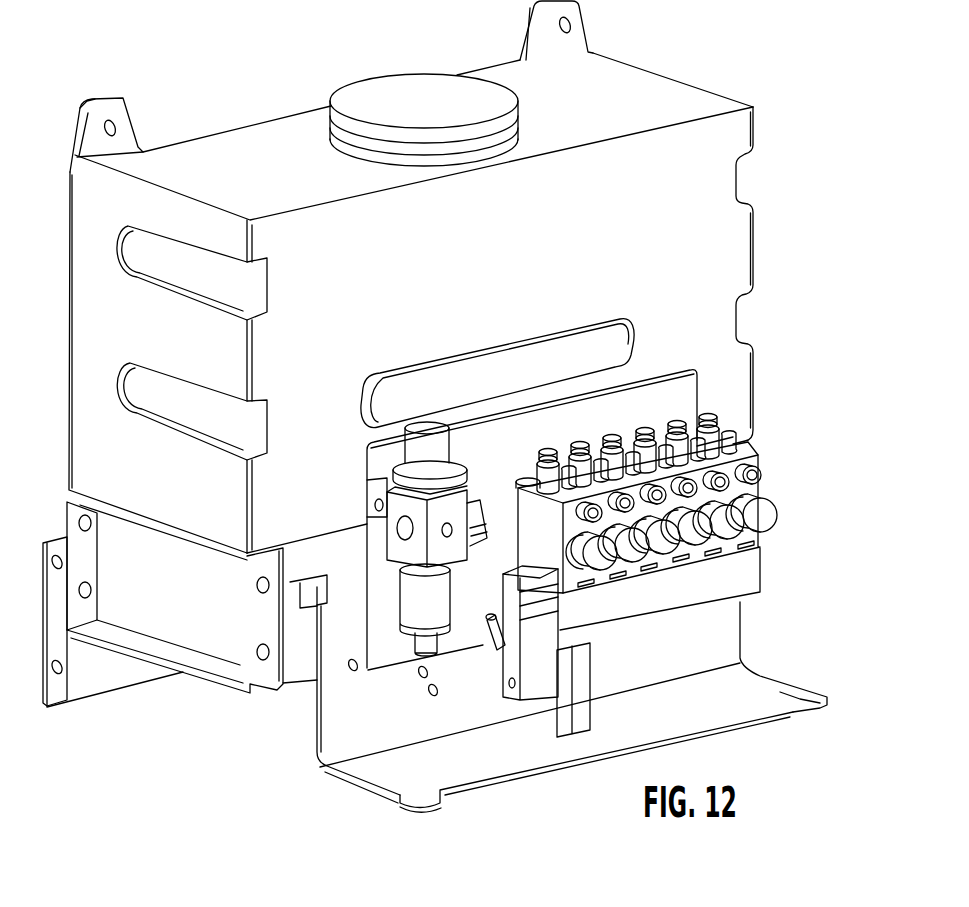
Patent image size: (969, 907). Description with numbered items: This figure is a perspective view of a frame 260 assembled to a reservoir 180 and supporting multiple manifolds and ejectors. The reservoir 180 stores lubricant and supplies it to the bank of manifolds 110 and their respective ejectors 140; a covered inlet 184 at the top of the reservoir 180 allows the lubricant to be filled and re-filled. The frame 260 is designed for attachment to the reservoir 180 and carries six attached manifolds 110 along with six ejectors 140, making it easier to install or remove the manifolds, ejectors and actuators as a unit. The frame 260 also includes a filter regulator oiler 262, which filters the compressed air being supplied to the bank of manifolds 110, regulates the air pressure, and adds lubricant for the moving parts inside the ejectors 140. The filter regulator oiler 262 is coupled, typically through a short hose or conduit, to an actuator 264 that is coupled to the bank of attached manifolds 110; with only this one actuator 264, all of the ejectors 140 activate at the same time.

The reservoir 180 is at (441, 277).
The covered inlet 184 is at (387, 83).
The frame 260 is at (697, 398).
The ejector 140 is at (760, 492).
The manifold 110 is at (760, 574).
The filter regulator oiler 262 is at (403, 618).
The actuator 264 is at (527, 690).